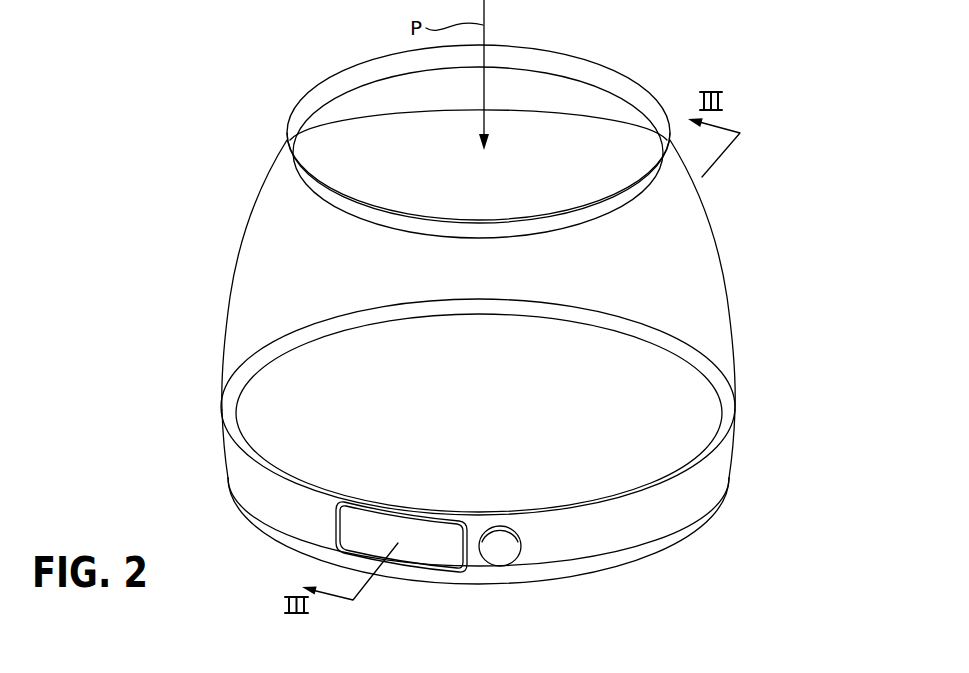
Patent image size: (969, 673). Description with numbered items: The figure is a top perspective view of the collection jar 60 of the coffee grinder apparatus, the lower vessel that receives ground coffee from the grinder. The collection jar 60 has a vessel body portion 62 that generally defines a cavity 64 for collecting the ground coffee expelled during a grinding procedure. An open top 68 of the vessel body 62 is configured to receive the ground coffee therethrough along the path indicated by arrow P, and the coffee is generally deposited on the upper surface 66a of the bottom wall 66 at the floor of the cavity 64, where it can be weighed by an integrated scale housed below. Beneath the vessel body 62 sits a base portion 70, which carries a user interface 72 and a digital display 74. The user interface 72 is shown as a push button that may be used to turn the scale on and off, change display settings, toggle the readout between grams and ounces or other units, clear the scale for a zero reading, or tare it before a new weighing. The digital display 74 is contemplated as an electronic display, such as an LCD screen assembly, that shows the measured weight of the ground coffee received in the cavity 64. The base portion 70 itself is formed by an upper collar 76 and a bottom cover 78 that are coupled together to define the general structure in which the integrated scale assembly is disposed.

The collection jar 60 is at (212, 290).
The vessel body portion 62 is at (262, 193).
The cavity 64 is at (316, 258).
The bottom wall 66 is at (643, 407).
The upper surface 66a is at (472, 430).
The open top 68 is at (617, 198).
The base portion 70 is at (237, 467).
The user interface 72 is at (502, 550).
The digital display 74 is at (430, 548).
The upper collar 76 is at (713, 463).
The bottom cover 78 is at (685, 527).